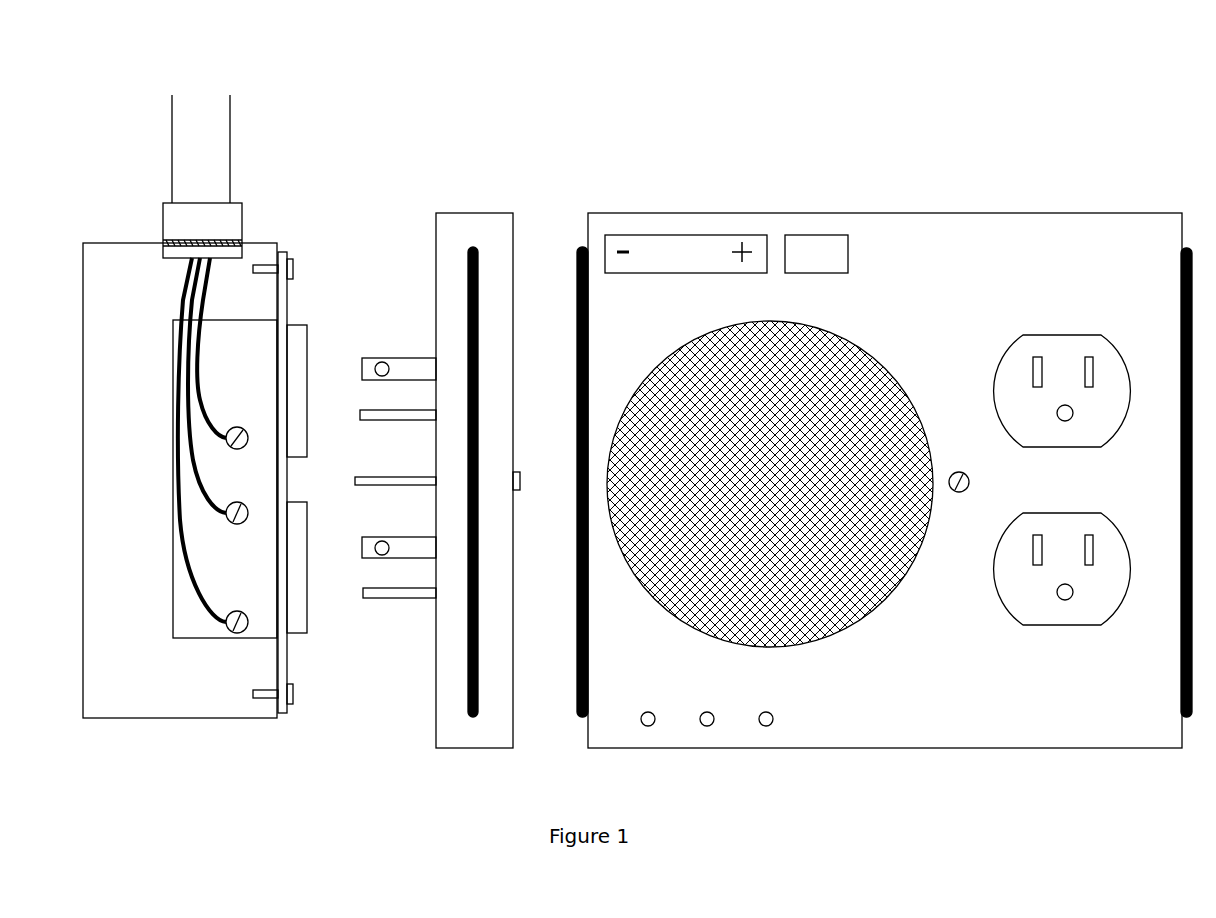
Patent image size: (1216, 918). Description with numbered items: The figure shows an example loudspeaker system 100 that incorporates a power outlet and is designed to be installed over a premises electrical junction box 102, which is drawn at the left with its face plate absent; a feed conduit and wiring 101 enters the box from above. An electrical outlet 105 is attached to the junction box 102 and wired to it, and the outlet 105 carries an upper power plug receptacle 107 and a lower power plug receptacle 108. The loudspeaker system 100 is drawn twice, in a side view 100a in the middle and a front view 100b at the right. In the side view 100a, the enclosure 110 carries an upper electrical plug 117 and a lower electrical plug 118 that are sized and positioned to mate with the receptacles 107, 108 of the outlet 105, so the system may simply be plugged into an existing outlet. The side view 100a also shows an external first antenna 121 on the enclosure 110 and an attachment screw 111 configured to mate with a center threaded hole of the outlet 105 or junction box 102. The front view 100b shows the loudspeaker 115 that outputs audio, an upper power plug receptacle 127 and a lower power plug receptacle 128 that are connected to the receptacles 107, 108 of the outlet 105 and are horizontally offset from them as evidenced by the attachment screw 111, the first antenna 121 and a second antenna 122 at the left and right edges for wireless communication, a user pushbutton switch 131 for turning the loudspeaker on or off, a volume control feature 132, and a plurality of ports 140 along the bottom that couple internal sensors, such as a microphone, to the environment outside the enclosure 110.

The loudspeaker system 100 is at (692, 95).
The side view 100a is at (490, 125).
The front view 100b is at (885, 125).
The electrical box assembly 101 is at (117, 128).
The electrical junction box 102 is at (137, 242).
The electrical outlet 105 is at (213, 640).
The upper power plug receptacle 107 is at (307, 423).
The lower power plug receptacle 108 is at (307, 600).
The enclosure 110 is at (503, 213).
The attachment screw 111 is at (522, 478).
The loudspeaker 115 is at (697, 336).
The upper electrical plug 117 is at (400, 357).
The lower electrical plug 118 is at (398, 536).
The first antenna 121 is at (468, 262).
The second antenna 122 is at (1180, 270).
The upper power plug receptacle 127 is at (1003, 355).
The lower power plug receptacle 128 is at (997, 583).
The user pushbutton switch 131 is at (818, 235).
The volume control feature 132 is at (683, 235).
The ports 140 is at (650, 727).